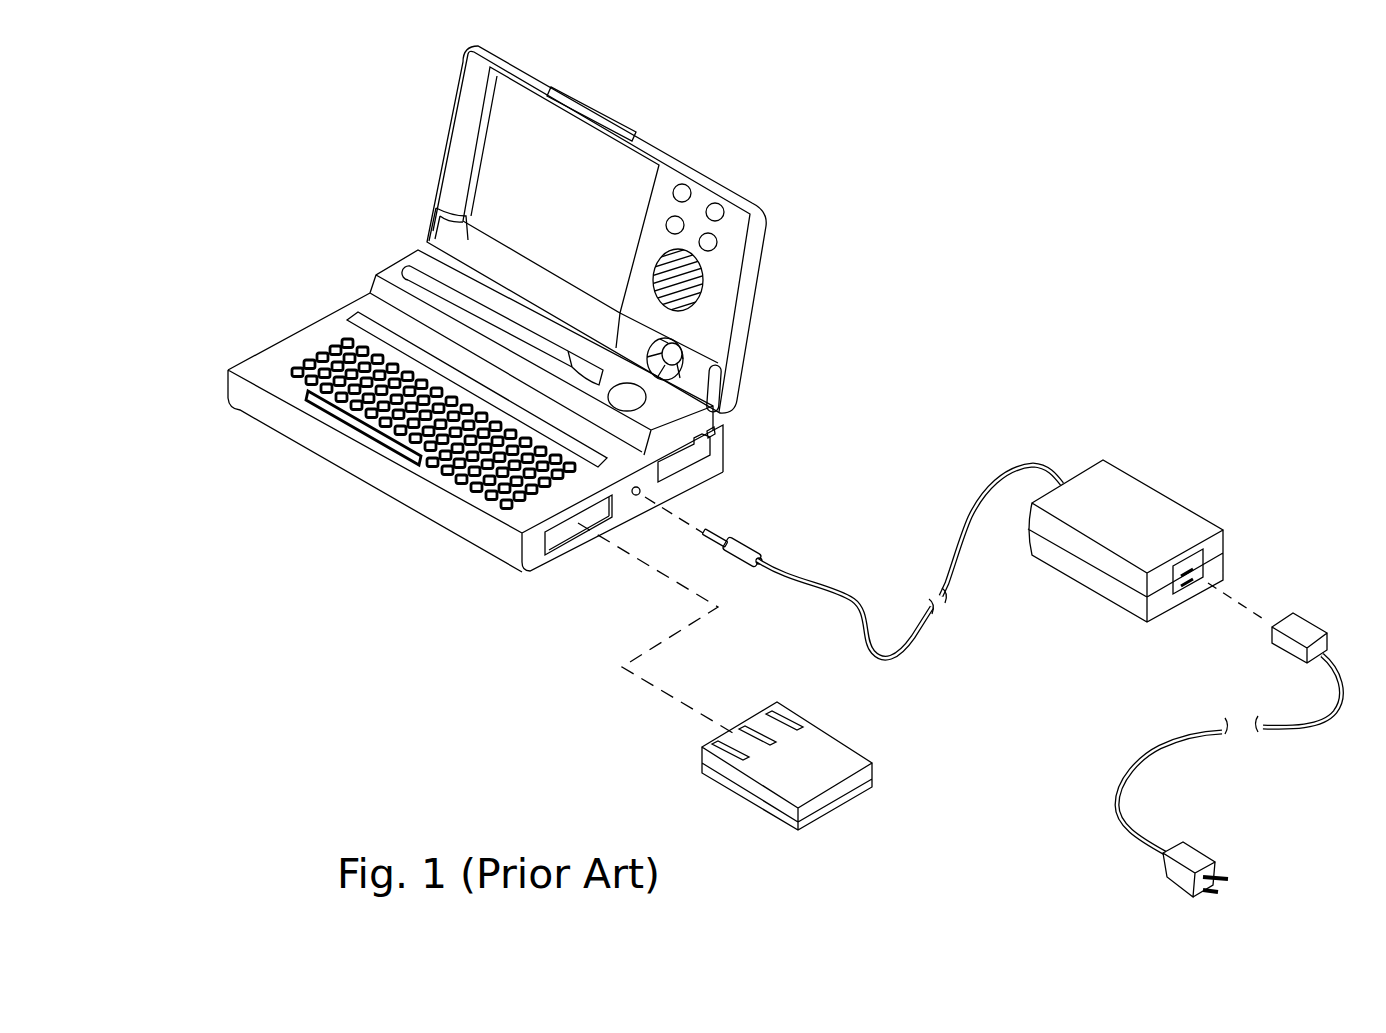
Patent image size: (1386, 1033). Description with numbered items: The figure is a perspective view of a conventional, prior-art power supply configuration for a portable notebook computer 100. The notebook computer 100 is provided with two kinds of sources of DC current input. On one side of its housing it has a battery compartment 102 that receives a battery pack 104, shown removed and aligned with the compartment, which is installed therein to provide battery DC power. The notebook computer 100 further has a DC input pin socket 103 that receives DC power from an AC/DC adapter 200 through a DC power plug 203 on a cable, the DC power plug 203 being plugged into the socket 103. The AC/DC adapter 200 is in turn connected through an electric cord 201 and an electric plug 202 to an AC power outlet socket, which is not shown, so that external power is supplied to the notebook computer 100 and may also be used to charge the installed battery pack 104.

The notebook computer 100 is at (740, 384).
The battery compartment 102 is at (561, 538).
The DC input pin socket 103 is at (638, 497).
The battery pack 104 is at (847, 743).
The AC/DC adapter 200 is at (1185, 503).
The electric cord 201 is at (1188, 733).
The electric plug 202 is at (1168, 882).
The DC power plug 203 is at (742, 545).